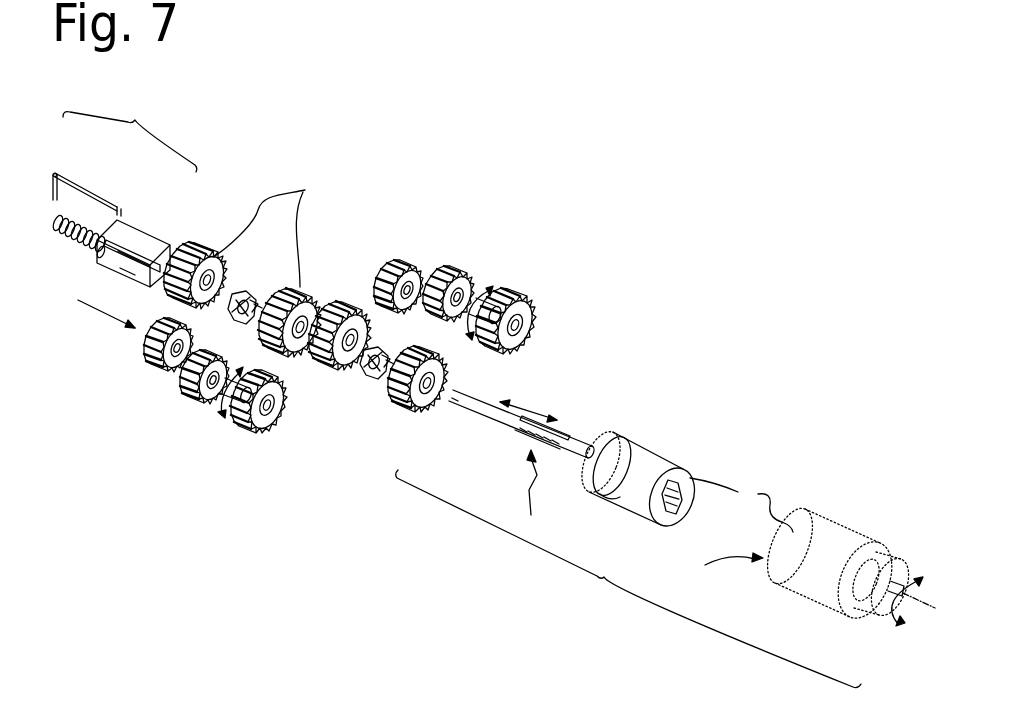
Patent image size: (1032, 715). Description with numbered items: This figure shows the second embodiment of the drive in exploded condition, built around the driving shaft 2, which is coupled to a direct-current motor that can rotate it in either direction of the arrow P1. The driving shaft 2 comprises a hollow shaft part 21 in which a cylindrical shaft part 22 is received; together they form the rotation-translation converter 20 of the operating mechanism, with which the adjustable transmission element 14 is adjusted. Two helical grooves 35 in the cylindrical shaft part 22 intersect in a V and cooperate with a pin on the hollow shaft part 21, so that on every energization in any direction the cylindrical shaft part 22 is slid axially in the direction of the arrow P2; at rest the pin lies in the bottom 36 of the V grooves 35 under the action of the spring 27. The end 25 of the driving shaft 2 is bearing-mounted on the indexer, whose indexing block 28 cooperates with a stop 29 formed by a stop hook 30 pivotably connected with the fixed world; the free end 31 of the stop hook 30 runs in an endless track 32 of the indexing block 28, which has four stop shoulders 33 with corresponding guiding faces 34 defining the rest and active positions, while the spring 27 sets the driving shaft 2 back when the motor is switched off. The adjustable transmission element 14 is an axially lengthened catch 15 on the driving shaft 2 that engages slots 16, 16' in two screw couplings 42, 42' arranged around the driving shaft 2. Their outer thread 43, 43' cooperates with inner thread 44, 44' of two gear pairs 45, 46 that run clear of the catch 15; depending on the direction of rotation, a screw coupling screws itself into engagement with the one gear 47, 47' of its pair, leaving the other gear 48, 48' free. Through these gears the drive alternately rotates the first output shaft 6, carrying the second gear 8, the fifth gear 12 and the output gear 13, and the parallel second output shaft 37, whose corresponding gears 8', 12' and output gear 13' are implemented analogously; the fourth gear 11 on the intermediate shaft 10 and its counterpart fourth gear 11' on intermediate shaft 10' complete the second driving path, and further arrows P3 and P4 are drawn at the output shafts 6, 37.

The driving shaft 2 is at (497, 417).
The output shaft 6 is at (238, 400).
The second gear 8 is at (260, 408).
The gear wheel 8' is at (524, 321).
The intermediate shaft 10 is at (165, 361).
The pinion 10' is at (401, 271).
The fourth gear 11 is at (146, 360).
The hub of pinion 11' is at (391, 266).
The fifth gear 12 is at (205, 402).
The pinion 12' is at (459, 271).
The output gear 13 is at (187, 400).
The hub of pinion 13' is at (450, 264).
The adjustable transmission element 14 is at (531, 490).
The catch 15 is at (562, 442).
The slots 16 is at (270, 284).
The gear wheel assembly 16' is at (407, 343).
The rotation-translation converter 20 is at (741, 505).
The hollow shaft part 21 is at (722, 565).
The cylindrical shaft part 22 is at (647, 458).
The end of the driving shaft 25 is at (452, 398).
The spring 27 is at (55, 232).
The indexing block 28 is at (140, 277).
The stop 29 is at (100, 178).
The stop hook 30 is at (53, 196).
The free end 31 is at (121, 211).
The endless track 32 is at (157, 243).
The stop shoulders 33 is at (100, 253).
The guiding faces 34 is at (130, 267).
The helical grooves 35 is at (615, 488).
The bottom of the V grooves 36 is at (615, 434).
The second output shaft 37 is at (507, 297).
The screw coupling 42 is at (240, 322).
The cam element 42' is at (374, 387).
The outer thread 43 is at (248, 276).
The cam lobe 43' is at (385, 342).
The inner thread 44 is at (197, 290).
The gear wheel 44' is at (341, 361).
The first gear pair 45 is at (269, 229).
The second gear pair 46 is at (396, 400).
The one gear of the gear pair 47 is at (214, 256).
The toothing 47' is at (355, 320).
The other gear of the gear pair 48 is at (298, 313).
The hub toothing 48' is at (453, 381).
The arrow P1 is at (913, 593).
The arrow P2 is at (313, 359).
The rotation direction P3 is at (223, 420).
The rotation direction P4 is at (485, 304).